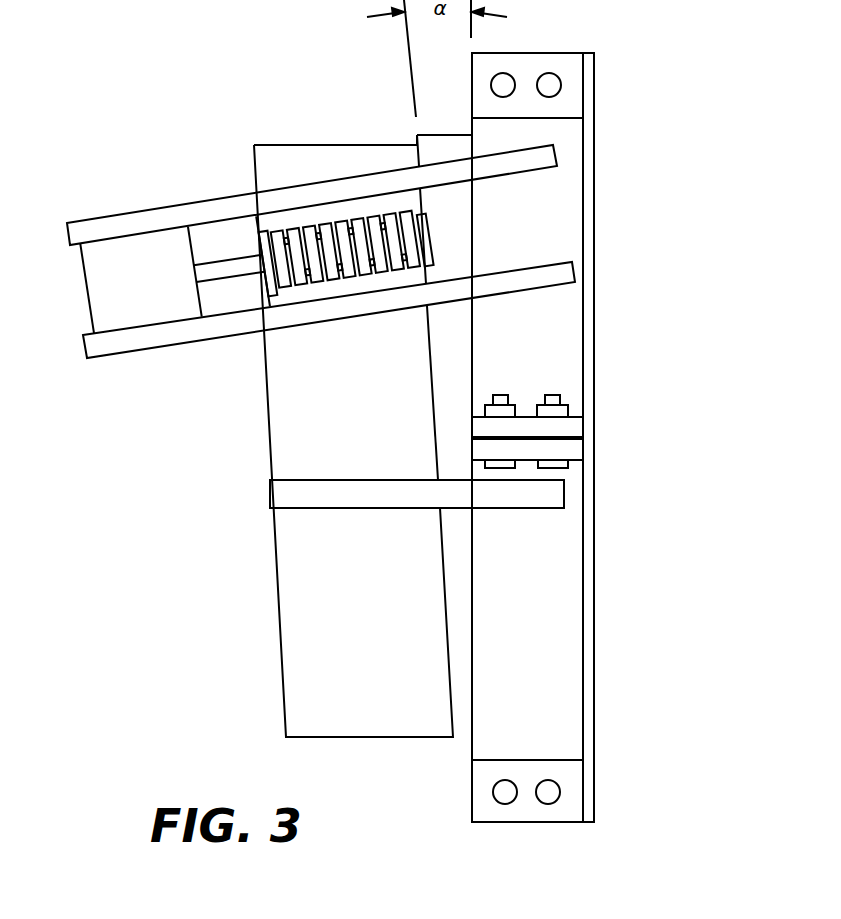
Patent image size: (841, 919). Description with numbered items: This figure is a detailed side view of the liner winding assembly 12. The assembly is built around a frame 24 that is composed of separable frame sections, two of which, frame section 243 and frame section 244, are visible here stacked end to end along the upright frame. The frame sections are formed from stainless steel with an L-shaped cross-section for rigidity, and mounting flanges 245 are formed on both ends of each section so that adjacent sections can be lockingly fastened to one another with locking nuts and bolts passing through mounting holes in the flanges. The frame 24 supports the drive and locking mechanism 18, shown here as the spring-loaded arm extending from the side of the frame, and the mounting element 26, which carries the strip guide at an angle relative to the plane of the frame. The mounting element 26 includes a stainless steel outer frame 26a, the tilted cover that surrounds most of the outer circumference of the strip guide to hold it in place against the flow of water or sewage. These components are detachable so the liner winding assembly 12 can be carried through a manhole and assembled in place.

The liner winding assembly 12 is at (236, 62).
The drive and locking mechanism 18 is at (105, 218).
The frame 24 is at (593, 300).
The frame section 243 is at (549, 229).
The frame section 244 is at (548, 633).
The mounting flanges 245 is at (530, 70).
The mounting element 26 is at (462, 707).
The outer frame 26a is at (282, 672).